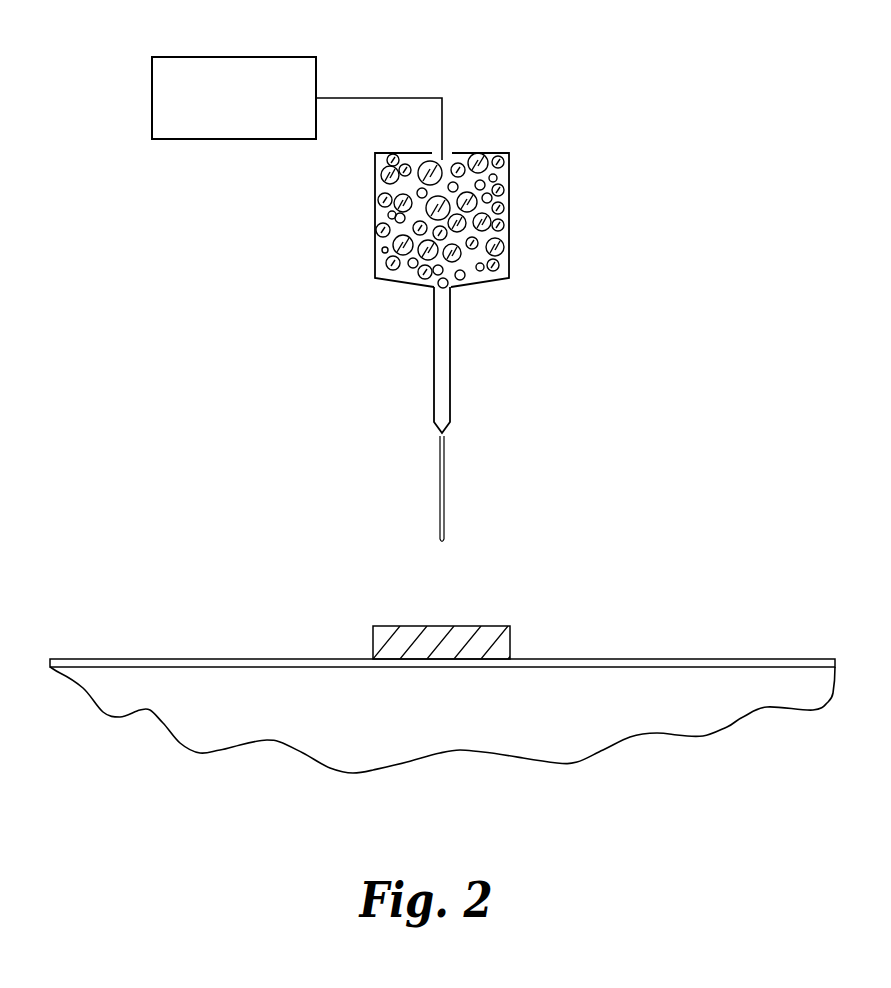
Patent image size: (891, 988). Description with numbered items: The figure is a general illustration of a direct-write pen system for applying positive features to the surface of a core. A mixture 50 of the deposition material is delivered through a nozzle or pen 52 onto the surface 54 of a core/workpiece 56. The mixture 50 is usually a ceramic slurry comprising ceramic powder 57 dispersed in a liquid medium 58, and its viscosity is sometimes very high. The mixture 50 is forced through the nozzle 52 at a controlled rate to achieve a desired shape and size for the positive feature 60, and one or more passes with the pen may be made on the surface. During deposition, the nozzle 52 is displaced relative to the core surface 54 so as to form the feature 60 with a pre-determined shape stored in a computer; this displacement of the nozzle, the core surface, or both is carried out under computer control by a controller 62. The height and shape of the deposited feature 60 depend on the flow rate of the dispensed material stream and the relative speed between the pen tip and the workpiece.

The mixture 50 is at (438, 497).
The nozzle 52 is at (442, 433).
The surface 54 is at (690, 660).
The core/workpiece 56 is at (660, 725).
The ceramic powder 57 is at (486, 157).
The liquid medium 58 is at (505, 178).
The positive feature 60 is at (514, 628).
The controller 62 is at (221, 126).